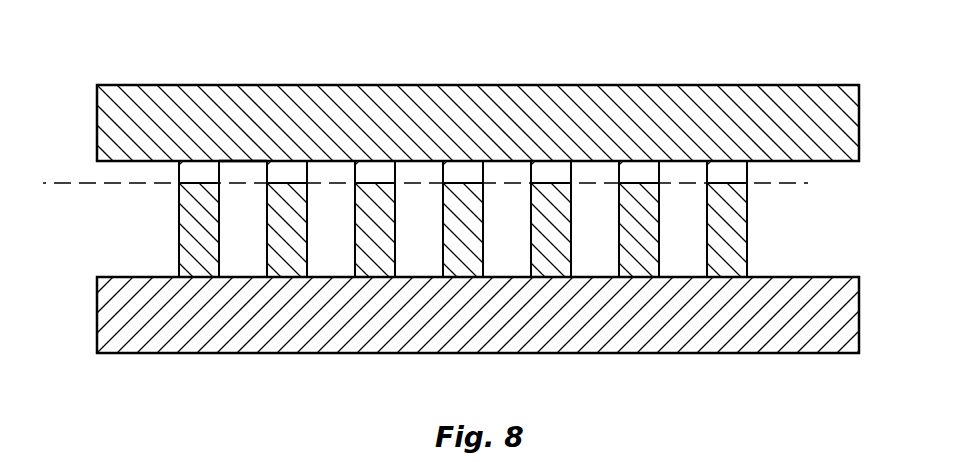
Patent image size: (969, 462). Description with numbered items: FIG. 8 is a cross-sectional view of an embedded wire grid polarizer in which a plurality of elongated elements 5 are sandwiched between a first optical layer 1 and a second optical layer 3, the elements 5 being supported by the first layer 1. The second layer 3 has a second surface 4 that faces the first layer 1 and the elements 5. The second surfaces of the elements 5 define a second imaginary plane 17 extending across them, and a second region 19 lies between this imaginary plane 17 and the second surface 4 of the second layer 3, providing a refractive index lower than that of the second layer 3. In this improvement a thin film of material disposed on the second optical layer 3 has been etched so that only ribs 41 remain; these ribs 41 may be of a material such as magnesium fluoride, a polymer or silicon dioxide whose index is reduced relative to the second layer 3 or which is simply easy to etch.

The first optical layer 1 is at (708, 340).
The second optical layer 3 is at (378, 97).
The second surface 4 is at (240, 166).
The elongated elements 5 is at (725, 200).
The second imaginary plane 17 is at (55, 183).
The second region 19 is at (253, 177).
The ribs 41 is at (548, 167).